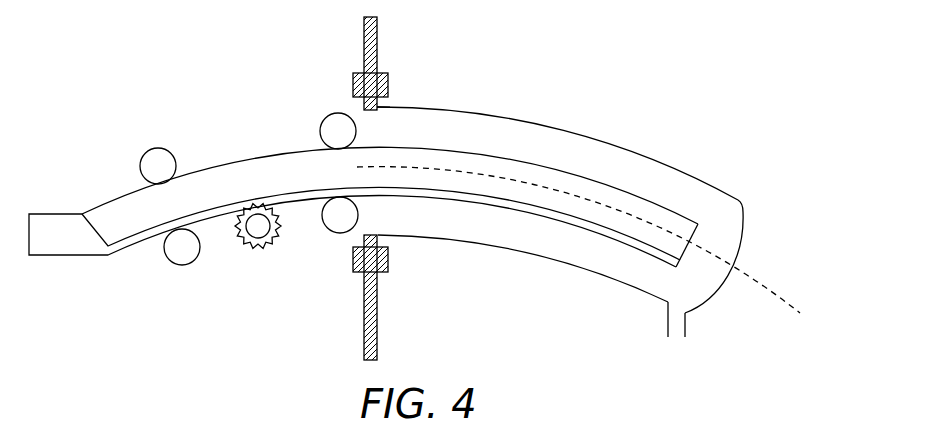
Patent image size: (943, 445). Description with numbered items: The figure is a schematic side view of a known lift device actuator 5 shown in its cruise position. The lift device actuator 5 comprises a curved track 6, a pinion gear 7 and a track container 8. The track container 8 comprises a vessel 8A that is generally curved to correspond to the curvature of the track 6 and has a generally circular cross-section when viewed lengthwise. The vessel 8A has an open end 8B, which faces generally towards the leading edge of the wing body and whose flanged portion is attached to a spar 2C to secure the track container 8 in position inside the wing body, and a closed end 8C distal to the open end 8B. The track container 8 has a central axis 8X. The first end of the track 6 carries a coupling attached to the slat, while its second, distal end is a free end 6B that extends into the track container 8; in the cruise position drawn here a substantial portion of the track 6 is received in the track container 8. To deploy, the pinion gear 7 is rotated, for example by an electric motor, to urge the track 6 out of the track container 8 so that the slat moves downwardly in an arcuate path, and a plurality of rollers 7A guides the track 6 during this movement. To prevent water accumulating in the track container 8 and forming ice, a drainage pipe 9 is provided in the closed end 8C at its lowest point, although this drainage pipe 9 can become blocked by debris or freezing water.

The lift device actuator 5 is at (179, 73).
The spar 2C is at (378, 25).
The curved track 6 is at (262, 165).
The free end 6B is at (686, 217).
The pinion gear 7 is at (263, 246).
The rollers 7A is at (190, 263).
The track container 8 is at (543, 263).
The vessel 8A is at (513, 121).
The open end 8B is at (368, 119).
The closed end 8C is at (742, 247).
The central axis 8X is at (783, 293).
The drainage pipe 9 is at (687, 327).